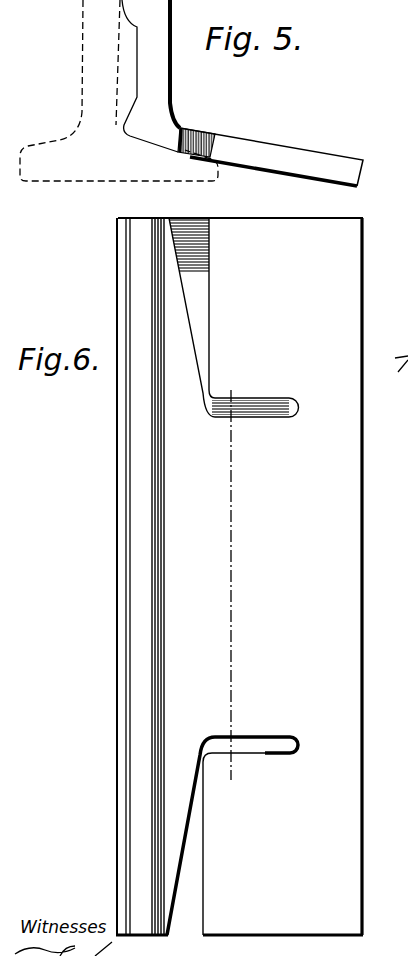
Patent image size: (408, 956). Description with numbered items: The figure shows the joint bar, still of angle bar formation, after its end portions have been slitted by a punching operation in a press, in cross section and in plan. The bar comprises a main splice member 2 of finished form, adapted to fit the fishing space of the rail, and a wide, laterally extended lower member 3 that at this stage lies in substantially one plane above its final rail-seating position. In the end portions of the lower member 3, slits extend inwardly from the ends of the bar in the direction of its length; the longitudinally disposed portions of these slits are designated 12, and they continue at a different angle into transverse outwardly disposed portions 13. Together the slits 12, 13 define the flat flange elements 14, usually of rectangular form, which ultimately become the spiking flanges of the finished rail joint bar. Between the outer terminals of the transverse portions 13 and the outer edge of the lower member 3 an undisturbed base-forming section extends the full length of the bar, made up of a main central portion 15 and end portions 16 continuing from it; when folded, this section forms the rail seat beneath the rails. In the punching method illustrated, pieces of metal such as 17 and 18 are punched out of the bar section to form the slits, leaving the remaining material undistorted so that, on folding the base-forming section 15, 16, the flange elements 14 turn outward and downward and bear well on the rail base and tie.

In FIG. 5, the main splice member 2 is at (119, 90).
In FIG. 6, the main splice member 2 is at (118, 621).
In FIG. 5, the lower member 3 is at (293, 150).
In FIG. 6, the lower member 3 is at (281, 576).
In FIG. 5, the longitudinal slit portion 12 is at (218, 135).
In FIG. 6, the longitudinal slit portion 12 is at (218, 296).
In FIG. 6, the transverse slit portion 13 is at (259, 399).
In FIG. 6, the flat flange element 14 is at (257, 602).
In FIG. 6, the main central portion 15 is at (324, 567).
In FIG. 6, the end portions 16 is at (328, 594).
In FIG. 6, the punched-out piece of metal 17 is at (196, 227).
In FIG. 6, the punched-out piece of metal 18 is at (270, 410).